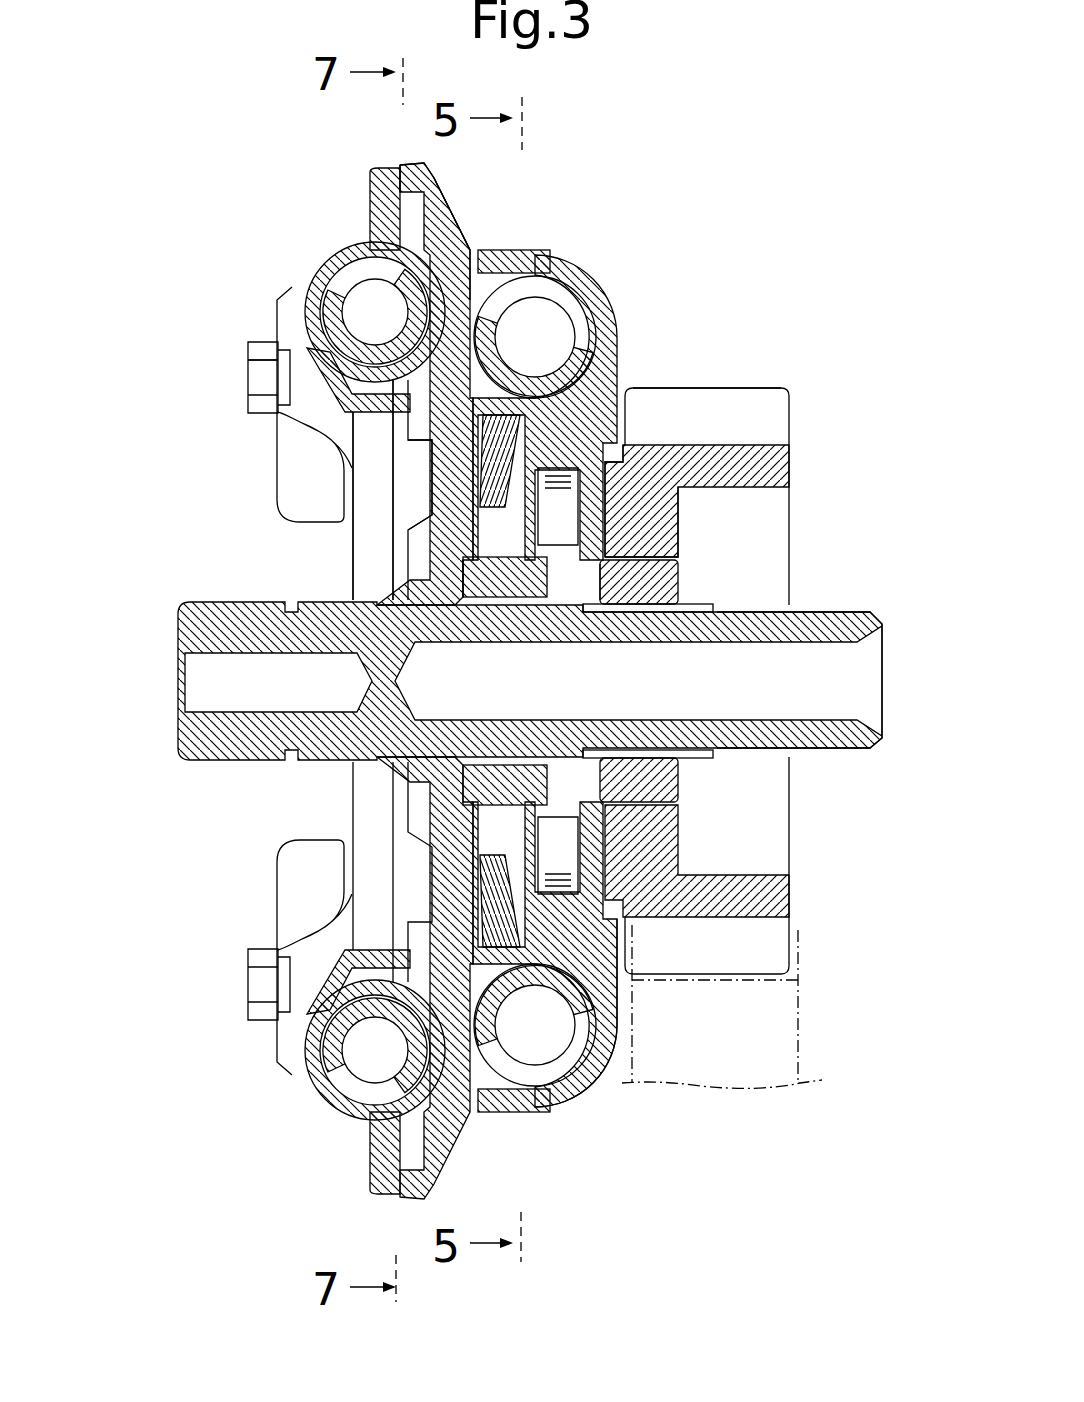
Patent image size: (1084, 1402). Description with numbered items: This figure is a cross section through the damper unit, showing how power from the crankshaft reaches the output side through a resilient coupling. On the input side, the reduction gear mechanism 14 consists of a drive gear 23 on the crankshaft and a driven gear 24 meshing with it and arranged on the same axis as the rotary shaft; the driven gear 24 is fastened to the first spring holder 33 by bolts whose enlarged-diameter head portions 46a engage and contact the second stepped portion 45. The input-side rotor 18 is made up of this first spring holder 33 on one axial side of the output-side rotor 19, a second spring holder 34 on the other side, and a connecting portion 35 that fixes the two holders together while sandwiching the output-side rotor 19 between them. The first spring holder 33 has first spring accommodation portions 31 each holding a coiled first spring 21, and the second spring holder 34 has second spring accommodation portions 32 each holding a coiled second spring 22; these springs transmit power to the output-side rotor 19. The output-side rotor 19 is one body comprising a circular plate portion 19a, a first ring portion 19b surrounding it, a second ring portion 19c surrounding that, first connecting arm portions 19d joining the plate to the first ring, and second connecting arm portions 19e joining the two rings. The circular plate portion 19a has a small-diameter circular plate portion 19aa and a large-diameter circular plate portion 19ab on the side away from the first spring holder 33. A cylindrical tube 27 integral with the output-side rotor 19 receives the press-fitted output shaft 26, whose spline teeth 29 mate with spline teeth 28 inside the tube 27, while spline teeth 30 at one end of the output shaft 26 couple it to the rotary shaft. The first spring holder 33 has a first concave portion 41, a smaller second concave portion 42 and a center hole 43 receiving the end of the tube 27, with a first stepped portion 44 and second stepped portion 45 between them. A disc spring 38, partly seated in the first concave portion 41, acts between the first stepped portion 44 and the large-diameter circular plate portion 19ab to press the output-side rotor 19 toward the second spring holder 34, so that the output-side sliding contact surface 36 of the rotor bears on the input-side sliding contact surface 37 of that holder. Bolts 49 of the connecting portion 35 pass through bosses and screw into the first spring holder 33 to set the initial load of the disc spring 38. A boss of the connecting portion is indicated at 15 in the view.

The reduction gear mechanism 14 is at (797, 392).
The bracket 15 is at (272, 1077).
The input-side rotor 18 is at (603, 264).
The output-side rotor 19 is at (416, 858).
The circular plate portion 19a is at (447, 553).
The small-diameter circular plate portion 19aa is at (512, 524).
The large-diameter circular plate portion 19ab is at (495, 840).
The first ring portion 19b is at (315, 380).
The second ring portion 19c is at (440, 188).
The first connecting arm portion 19d is at (435, 467).
The second connecting arm portion 19e is at (462, 268).
The first spring 21 is at (592, 338).
The second spring 22 is at (352, 270).
The drive gear 23 is at (802, 1046).
The driven gear 24 is at (733, 386).
The output shaft 26 is at (818, 612).
The cylindrical tube 27 is at (665, 582).
The spline teeth 28 is at (648, 618).
The spline teeth 29 is at (700, 760).
The spline teeth 30 is at (220, 602).
The first spring accommodation portion 31 is at (540, 302).
The second spring accommodation portion 32 is at (332, 305).
The first spring holder 33 is at (614, 396).
The second spring holder 34 is at (300, 420).
The connecting portion 35 is at (238, 332).
The output-side sliding contact surface 36 is at (372, 200).
The input-side sliding contact surface 37 is at (403, 182).
The disc spring 38 is at (515, 470).
The first concave portion 41 is at (503, 860).
The second concave portion 42 is at (615, 975).
The center hole 43 is at (672, 822).
The first stepped portion 44 is at (555, 905).
The second stepped portion 45 is at (553, 542).
The enlarged-diameter head portion 46a is at (490, 530).
The bolt 49 is at (262, 390).